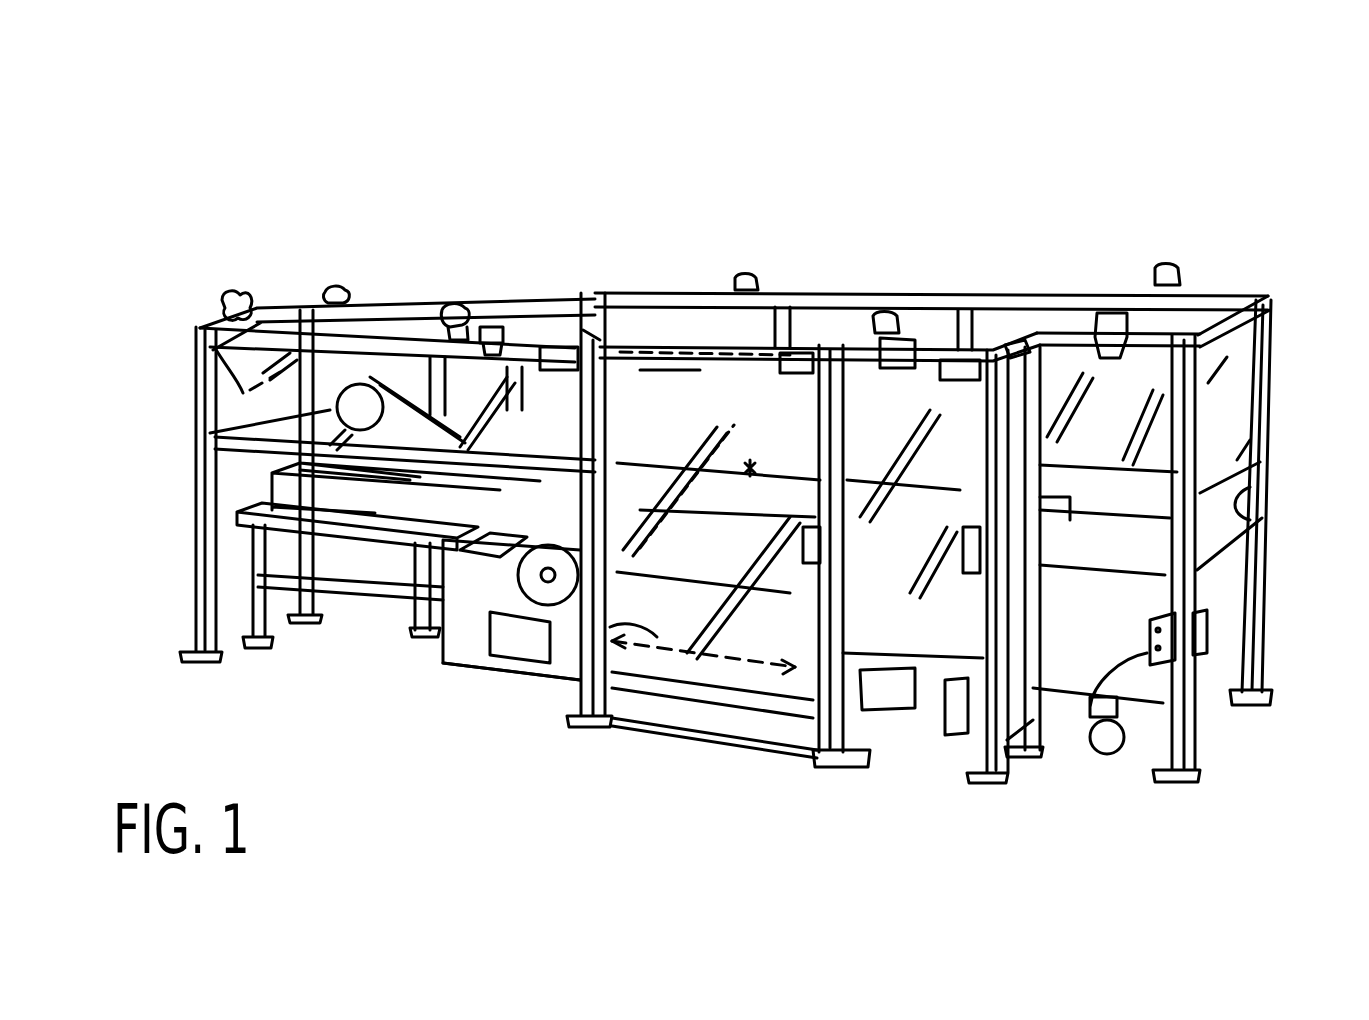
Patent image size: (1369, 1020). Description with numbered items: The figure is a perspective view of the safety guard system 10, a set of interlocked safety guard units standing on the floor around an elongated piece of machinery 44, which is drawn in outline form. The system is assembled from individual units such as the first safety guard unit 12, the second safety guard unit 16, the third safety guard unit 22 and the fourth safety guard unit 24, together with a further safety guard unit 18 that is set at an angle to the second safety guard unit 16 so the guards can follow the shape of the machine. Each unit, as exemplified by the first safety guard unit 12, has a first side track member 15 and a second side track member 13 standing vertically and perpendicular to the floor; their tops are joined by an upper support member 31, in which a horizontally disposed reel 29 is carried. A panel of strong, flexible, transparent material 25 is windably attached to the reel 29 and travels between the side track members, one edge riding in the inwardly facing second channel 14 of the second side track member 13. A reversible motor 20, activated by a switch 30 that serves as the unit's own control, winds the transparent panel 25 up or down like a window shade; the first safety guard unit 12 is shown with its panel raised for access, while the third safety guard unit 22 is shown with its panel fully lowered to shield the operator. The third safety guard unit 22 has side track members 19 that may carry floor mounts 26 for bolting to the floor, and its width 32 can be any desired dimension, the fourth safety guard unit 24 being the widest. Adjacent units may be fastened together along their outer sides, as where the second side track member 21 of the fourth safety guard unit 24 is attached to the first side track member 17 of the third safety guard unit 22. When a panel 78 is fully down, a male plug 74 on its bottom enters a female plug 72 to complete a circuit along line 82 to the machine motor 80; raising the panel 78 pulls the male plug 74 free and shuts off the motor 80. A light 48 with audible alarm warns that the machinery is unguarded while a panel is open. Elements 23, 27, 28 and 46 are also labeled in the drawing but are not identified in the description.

The safety guard system 10 is at (497, 180).
The first safety guard unit 12 is at (1237, 377).
The second side track member 13 is at (1253, 600).
The second channel 14 is at (1250, 528).
The first side track member 15 is at (1193, 732).
The second safety guard unit 16 is at (1040, 330).
The first side track member 17 is at (607, 614).
The safety guard unit 18 is at (975, 348).
The side track member 19 is at (800, 490).
The reversible motor 20 is at (958, 350).
The second side track member 21 is at (507, 482).
The third safety guard unit 22 is at (590, 335).
The sensor 23 is at (728, 460).
The fourth safety guard unit 24 is at (200, 333).
The transparent panel 25 is at (770, 648).
The floor mounts 26 is at (833, 762).
The rear leg 27 is at (1250, 625).
The feed mechanism 28 is at (599, 420).
The reel 29 is at (618, 345).
The switch 30 is at (1113, 725).
The upper support member 31 is at (657, 368).
The width 32 is at (583, 633).
The piece of machinery 44 is at (418, 608).
The clamp 46 is at (243, 298).
The light with audible alarm 48 is at (496, 322).
The female plug 72 is at (905, 655).
The male plug 74 is at (833, 760).
The panel 78 is at (905, 607).
The machine motor 80 is at (970, 777).
The line 82 is at (867, 733).